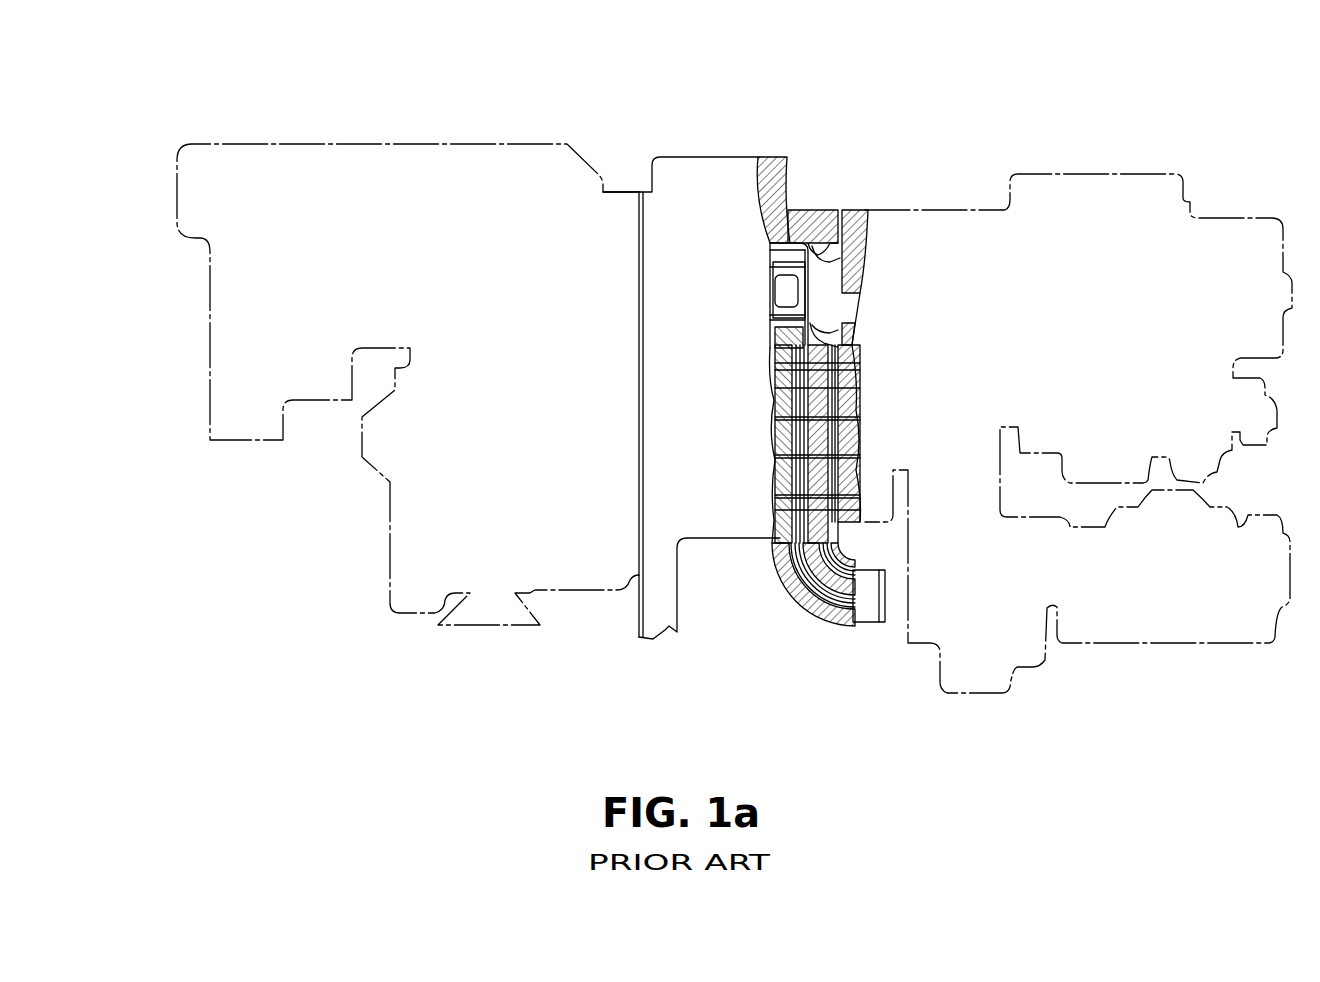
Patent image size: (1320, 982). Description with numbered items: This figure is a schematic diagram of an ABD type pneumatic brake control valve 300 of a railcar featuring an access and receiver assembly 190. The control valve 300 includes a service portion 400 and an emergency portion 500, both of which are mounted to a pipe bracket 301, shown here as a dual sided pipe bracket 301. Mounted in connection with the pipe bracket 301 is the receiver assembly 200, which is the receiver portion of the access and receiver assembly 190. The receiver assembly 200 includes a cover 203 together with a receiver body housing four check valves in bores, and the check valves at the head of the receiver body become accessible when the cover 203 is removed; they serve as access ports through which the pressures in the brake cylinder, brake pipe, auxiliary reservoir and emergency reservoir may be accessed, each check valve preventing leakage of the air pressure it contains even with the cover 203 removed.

The emergency portion 500 is at (365, 144).
The pipe bracket 301 is at (697, 157).
The access and receiver assembly 190 is at (815, 210).
The pneumatic control valve 300 is at (903, 168).
The service portion 400 is at (1103, 174).
The receiver assembly 200 is at (863, 622).
The cover 203 is at (883, 612).